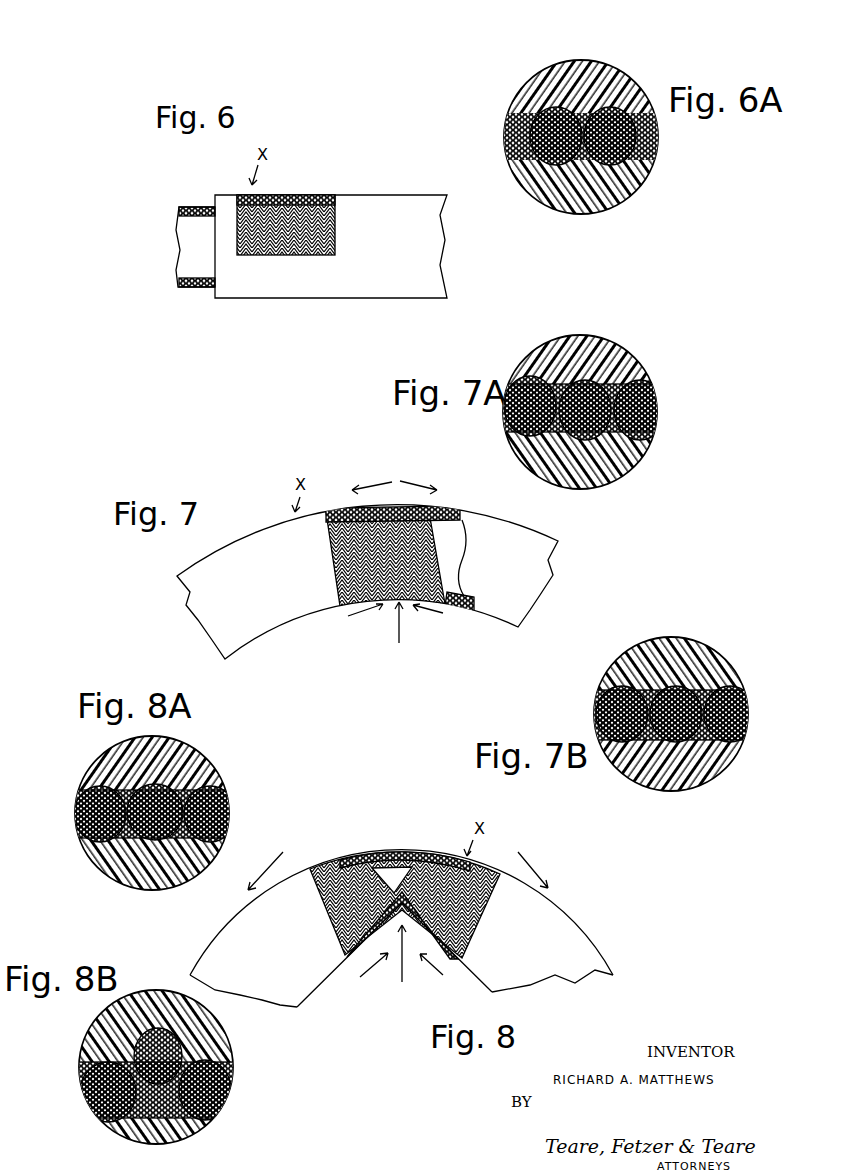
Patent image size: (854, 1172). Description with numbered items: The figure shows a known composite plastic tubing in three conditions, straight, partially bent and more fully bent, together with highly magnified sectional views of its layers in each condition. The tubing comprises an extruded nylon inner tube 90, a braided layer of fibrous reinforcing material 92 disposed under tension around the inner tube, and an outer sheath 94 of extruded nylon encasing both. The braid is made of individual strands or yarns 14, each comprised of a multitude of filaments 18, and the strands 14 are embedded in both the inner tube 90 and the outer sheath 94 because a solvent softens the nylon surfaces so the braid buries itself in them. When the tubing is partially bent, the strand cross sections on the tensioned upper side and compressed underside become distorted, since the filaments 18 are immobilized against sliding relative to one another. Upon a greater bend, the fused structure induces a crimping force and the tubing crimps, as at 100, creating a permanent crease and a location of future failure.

In FIG. 6A, the strands or yarns 14 is at (567, 108).
In FIG. 7A, the strands or yarns 14 is at (645, 430).
In FIG. 7B, the strands or yarns 14 is at (744, 713).
In FIG. 8A, the strands or yarns 14 is at (225, 800).
In FIG. 8B, the strands or yarns 14 is at (180, 1038).
In FIG. 6A, the filaments 18 is at (602, 108).
In FIG. 7A, the filaments 18 is at (588, 392).
In FIG. 7B, the filaments 18 is at (675, 742).
In FIG. 8A, the filaments 18 is at (112, 840).
In FIG. 8B, the filaments 18 is at (214, 1078).
In FIG. 6, the inner tube 90 is at (178, 283).
In FIG. 6A, the inner tube 90 is at (535, 186).
In FIG. 7A, the inner tube 90 is at (636, 461).
In FIG. 7B, the inner tube 90 is at (686, 650).
In FIG. 8A, the inner tube 90 is at (205, 858).
In FIG. 8B, the inner tube 90 is at (160, 996).
In FIG. 6, the braided reinforcing material 92 is at (198, 206).
In FIG. 6A, the braided reinforcing material 92 is at (660, 138).
In FIG. 7A, the braided reinforcing material 92 is at (658, 409).
In FIG. 7B, the braided reinforcing material 92 is at (600, 708).
In FIG. 8A, the braided reinforcing material 92 is at (78, 808).
In FIG. 8B, the braided reinforcing material 92 is at (224, 1103).
In FIG. 6, the outer sheath 94 is at (412, 202).
In FIG. 6A, the outer sheath 94 is at (530, 72).
In FIG. 7A, the outer sheath 94 is at (542, 366).
In FIG. 7B, the outer sheath 94 is at (730, 756).
In FIG. 8A, the outer sheath 94 is at (205, 769).
In FIG. 8B, the outer sheath 94 is at (196, 1125).
In FIG. 8, the crimp 100 is at (410, 888).